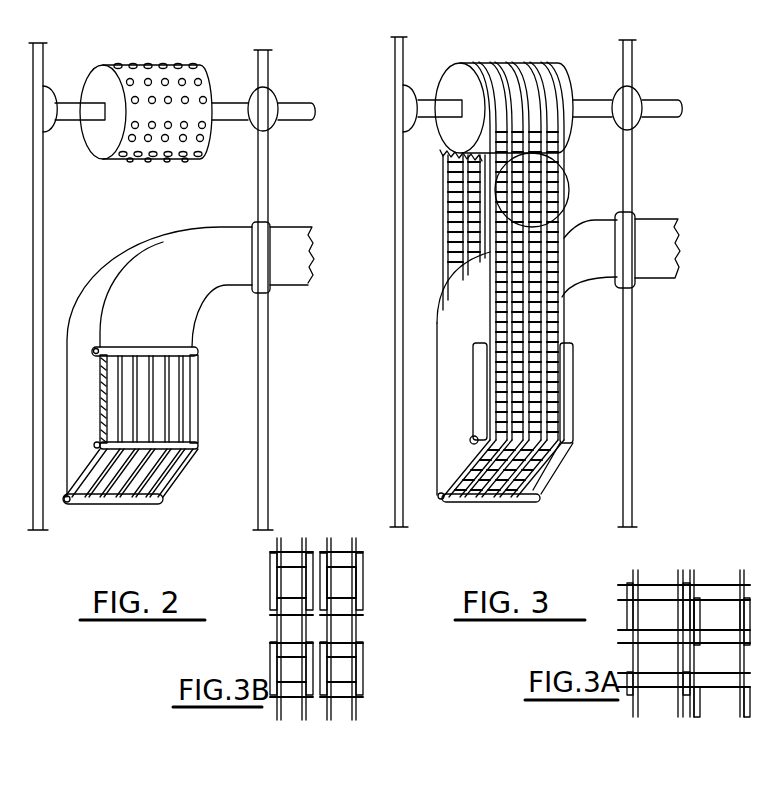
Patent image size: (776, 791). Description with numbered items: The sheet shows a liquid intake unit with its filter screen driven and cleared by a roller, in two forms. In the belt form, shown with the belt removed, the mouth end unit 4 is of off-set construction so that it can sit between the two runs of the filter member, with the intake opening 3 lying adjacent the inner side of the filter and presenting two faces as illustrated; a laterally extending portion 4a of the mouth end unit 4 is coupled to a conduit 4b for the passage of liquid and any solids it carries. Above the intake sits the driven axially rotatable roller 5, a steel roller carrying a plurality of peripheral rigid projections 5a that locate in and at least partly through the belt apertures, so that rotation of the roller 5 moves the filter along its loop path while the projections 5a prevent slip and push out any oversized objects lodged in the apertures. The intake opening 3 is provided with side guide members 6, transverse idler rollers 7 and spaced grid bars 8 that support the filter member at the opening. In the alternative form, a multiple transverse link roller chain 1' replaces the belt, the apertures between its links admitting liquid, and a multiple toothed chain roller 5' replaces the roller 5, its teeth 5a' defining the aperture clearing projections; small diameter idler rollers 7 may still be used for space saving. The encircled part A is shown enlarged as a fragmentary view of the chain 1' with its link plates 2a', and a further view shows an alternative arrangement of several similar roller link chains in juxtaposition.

In FIG. 3, the multiple transverse link roller chain 1' is at (550, 279).
In FIG. 3B, the multiple transverse link roller chain 1' is at (316, 611).
In FIG. 3A, the multiple transverse link roller chain 1' is at (684, 620).
In FIG. 3B, the chain link plate 2a' is at (364, 575).
In FIG. 3A, the chain link plate 2a' is at (718, 581).
In FIG. 2, the intake opening 3 is at (158, 428).
In FIG. 2, the mouth end unit 4 is at (79, 292).
In FIG. 3, the mouth end unit 4 is at (429, 325).
In FIG. 2, the laterally extending portion 4a is at (227, 233).
In FIG. 3, the laterally extending portion 4a is at (590, 220).
In FIG. 2, the conduit 4b is at (290, 236).
In FIG. 3, the conduit 4b is at (660, 233).
In FIG. 2, the driven axially rotatable roller 5 is at (146, 94).
In FIG. 3, the multiple toothed chain roller 5' is at (504, 87).
In FIG. 2, the peripheral rigid projections 5a is at (160, 95).
In FIG. 3, the teeth 5a' is at (422, 161).
In FIG. 2, the side guide members 6 is at (100, 390).
In FIG. 3, the side guide members 6 is at (573, 422).
In FIG. 2, the transverse idler rollers 7 is at (125, 348).
In FIG. 3, the transverse idler rollers 7 is at (470, 440).
In FIG. 2, the grid bars 8 is at (170, 412).
In FIG. 3, the encircled part A is at (569, 185).